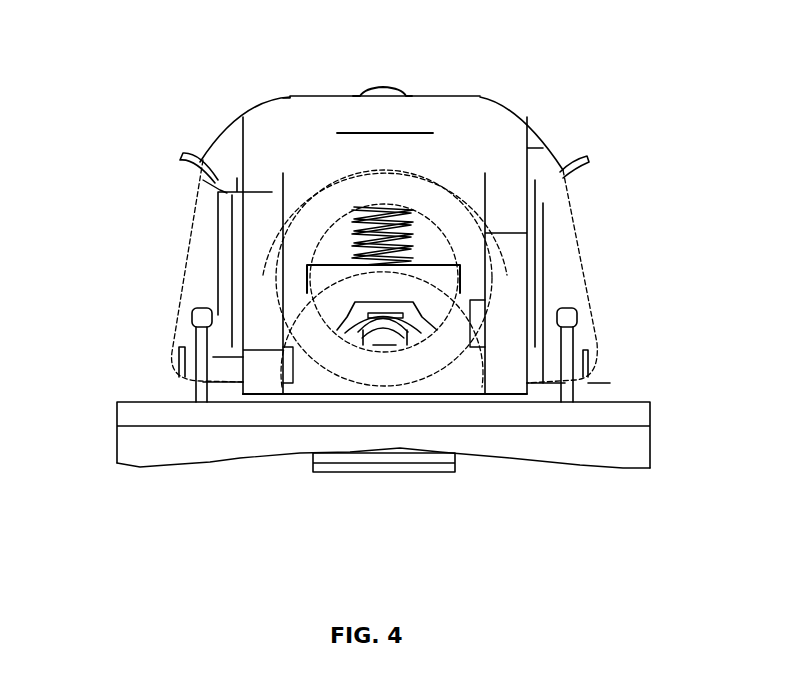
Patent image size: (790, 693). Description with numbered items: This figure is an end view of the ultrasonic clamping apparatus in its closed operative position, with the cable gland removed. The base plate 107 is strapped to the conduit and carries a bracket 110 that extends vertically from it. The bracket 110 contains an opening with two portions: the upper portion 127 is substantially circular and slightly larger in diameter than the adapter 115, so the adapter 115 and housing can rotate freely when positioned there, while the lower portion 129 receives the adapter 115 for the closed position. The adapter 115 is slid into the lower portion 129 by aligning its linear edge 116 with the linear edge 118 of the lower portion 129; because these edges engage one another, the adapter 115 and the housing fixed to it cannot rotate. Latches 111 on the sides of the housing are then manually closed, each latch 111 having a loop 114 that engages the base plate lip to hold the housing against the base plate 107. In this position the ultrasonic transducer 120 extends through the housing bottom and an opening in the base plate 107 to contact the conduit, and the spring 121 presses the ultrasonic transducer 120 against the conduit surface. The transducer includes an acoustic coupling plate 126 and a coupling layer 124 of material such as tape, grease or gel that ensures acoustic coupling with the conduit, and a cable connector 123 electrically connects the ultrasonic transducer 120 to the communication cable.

The base plate 107 is at (118, 466).
The bracket 110 is at (487, 98).
The latch 111 is at (187, 290).
The loop 114 is at (196, 342).
The adapter 115 is at (455, 208).
The linear edge of the adapter 116 is at (527, 233).
The linear edge of the lower portion of the opening 118 is at (437, 325).
The ultrasonic transducer 120 is at (470, 393).
The spring 121 is at (378, 207).
The cable connector 123 is at (266, 394).
The coupling layer 124 is at (375, 472).
The acoustic coupling plate 126 is at (300, 140).
The upper portion of the opening 127 is at (213, 187).
The lower portion of the opening 129 is at (243, 357).